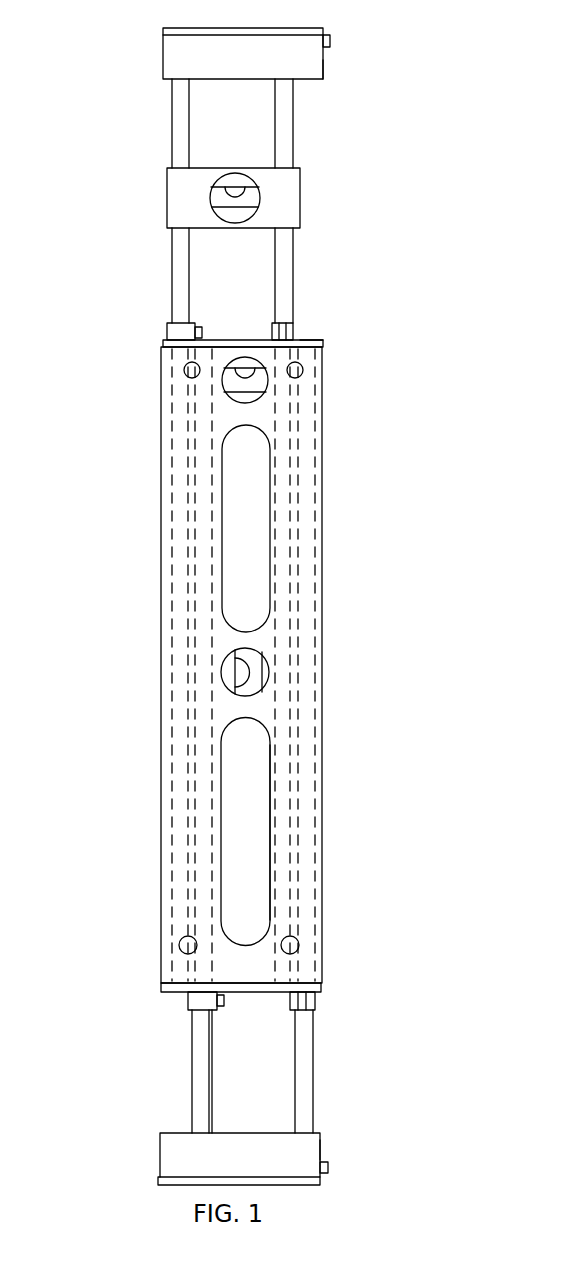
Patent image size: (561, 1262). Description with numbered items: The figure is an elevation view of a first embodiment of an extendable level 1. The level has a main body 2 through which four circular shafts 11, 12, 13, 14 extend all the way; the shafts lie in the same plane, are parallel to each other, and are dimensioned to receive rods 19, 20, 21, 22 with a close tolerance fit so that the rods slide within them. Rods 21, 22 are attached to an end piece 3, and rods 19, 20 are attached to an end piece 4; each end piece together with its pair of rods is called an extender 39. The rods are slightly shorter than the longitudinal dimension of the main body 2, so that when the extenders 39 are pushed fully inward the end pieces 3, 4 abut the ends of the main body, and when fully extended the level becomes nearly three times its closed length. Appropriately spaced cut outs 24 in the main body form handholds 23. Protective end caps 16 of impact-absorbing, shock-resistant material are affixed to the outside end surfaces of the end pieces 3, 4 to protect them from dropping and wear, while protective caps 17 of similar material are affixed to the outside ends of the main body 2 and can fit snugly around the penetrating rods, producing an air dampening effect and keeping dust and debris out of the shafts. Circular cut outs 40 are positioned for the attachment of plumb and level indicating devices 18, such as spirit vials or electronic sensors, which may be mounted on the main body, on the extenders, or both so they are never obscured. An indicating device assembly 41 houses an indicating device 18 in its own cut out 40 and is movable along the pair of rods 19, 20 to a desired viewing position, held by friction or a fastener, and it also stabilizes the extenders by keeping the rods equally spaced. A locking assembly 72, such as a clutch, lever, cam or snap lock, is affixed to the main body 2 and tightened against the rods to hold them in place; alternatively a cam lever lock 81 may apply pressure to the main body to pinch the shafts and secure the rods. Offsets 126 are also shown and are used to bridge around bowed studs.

The clamp assembly 1 is at (327, 338).
The main body 2 is at (323, 545).
The end piece 3 is at (160, 1157).
The end piece 4 is at (163, 58).
The circular shaft 11 is at (310, 593).
The circular shaft 12 is at (280, 653).
The circular shaft 13 is at (193, 597).
The circular shaft 14 is at (180, 650).
The protective end cap 16 is at (163, 30).
The protective cap 17 is at (163, 345).
The plumb and level indicating device 18 is at (218, 205).
The rod 19 is at (293, 118).
The rod 20 is at (172, 122).
The rod 21 is at (313, 1083).
The rod 22 is at (192, 1057).
The handhold 23 is at (252, 842).
The cut out 24 is at (268, 780).
The extender 39 is at (327, 64).
The circular cut out 40 is at (250, 221).
The indicating device assembly 41 is at (300, 195).
The locking assembly 72 is at (163, 330).
The cam lever lock 81 is at (184, 376).
The offset 126 is at (330, 40).